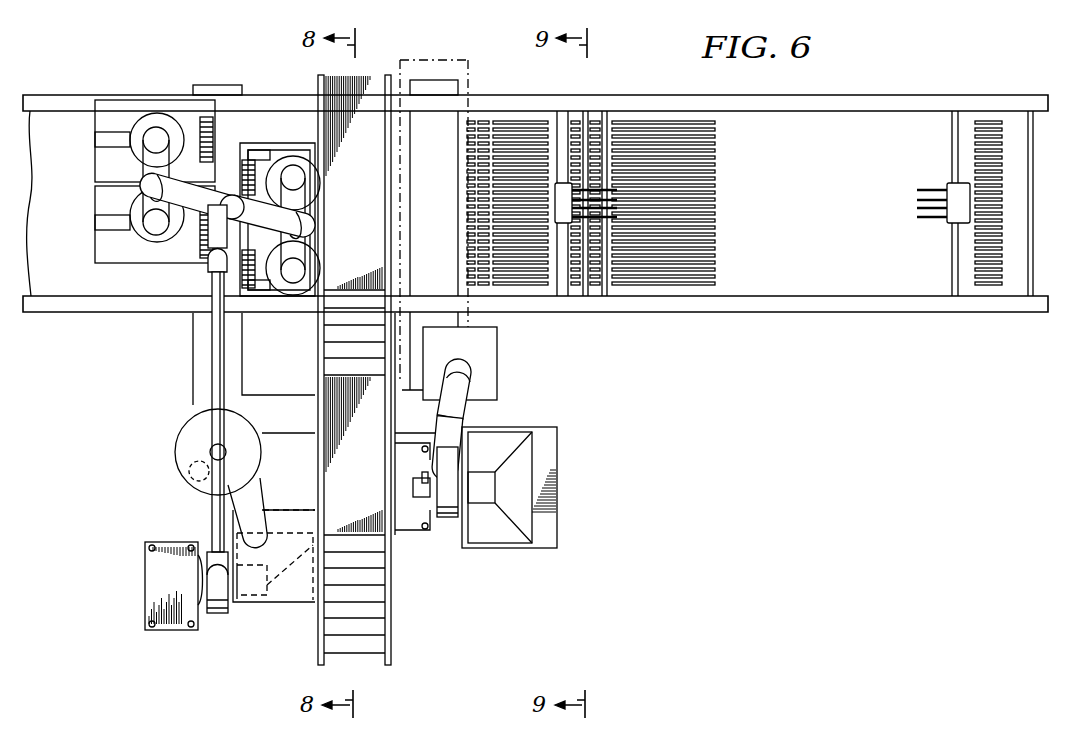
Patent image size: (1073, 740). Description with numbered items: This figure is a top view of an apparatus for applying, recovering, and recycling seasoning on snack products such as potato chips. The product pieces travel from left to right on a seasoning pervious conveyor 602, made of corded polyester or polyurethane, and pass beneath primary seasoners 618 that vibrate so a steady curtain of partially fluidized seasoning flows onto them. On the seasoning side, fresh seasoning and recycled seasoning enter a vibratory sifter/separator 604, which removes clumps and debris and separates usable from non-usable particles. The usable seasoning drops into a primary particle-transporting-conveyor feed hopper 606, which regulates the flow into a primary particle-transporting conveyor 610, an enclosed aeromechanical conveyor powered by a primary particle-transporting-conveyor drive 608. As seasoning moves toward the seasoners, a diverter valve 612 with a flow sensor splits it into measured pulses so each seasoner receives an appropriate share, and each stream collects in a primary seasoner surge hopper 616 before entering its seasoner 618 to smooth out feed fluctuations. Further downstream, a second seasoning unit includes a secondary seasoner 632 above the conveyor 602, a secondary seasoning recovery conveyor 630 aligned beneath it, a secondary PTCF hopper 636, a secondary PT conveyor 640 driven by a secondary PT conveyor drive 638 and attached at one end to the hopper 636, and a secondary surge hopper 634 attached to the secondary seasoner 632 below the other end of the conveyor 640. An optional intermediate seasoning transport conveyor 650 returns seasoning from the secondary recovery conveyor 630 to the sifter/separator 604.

The seasoning pervious conveyor 602 is at (52, 117).
The sifter/separator 604 is at (177, 452).
The primary particle-transporting-conveyor feed hopper 606 is at (274, 604).
The primary particle-transporting-conveyor drive 608 is at (219, 614).
The primary particle-transporting conveyor 610 is at (212, 523).
The diverter valve 612 is at (227, 197).
The primary seasoner surge hopper 616 is at (157, 118).
The primary seasoner 618 is at (204, 122).
The secondary seasoning recovery conveyor 630 is at (423, 80).
The secondary seasoner 632 is at (460, 58).
The secondary surge hopper 634 is at (497, 362).
The secondary PTCF hopper 636 is at (557, 533).
The secondary PT conveyor drive 638 is at (448, 519).
The secondary PT conveyor 640 is at (476, 400).
The intermediate seasoning transport conveyor 650 is at (302, 433).